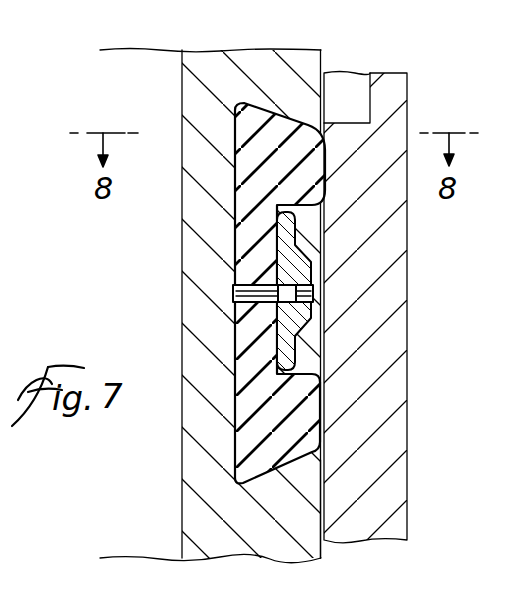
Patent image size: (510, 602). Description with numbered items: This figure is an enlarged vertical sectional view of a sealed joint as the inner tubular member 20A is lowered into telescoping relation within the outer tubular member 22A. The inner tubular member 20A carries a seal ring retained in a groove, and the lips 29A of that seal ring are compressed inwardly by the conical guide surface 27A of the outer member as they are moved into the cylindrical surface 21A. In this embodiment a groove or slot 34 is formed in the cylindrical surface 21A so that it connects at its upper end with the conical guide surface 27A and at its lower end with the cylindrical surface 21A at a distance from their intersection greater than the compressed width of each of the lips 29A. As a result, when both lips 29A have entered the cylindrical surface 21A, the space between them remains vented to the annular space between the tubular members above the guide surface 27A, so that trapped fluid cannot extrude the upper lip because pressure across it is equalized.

The inner tubular member 20A is at (320, 57).
The cylindrical surface 21A is at (313, 528).
The outer tubular member 22A is at (408, 323).
The conical guide surface 27A is at (325, 252).
The lips 29A is at (325, 192).
The groove or slot 34 is at (338, 190).